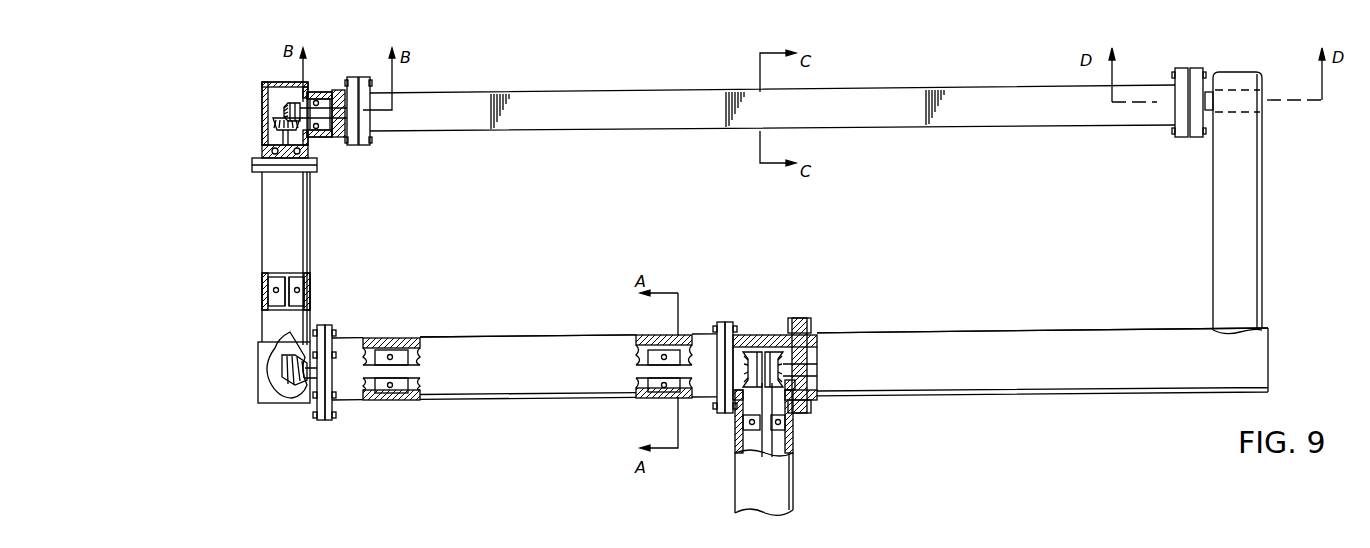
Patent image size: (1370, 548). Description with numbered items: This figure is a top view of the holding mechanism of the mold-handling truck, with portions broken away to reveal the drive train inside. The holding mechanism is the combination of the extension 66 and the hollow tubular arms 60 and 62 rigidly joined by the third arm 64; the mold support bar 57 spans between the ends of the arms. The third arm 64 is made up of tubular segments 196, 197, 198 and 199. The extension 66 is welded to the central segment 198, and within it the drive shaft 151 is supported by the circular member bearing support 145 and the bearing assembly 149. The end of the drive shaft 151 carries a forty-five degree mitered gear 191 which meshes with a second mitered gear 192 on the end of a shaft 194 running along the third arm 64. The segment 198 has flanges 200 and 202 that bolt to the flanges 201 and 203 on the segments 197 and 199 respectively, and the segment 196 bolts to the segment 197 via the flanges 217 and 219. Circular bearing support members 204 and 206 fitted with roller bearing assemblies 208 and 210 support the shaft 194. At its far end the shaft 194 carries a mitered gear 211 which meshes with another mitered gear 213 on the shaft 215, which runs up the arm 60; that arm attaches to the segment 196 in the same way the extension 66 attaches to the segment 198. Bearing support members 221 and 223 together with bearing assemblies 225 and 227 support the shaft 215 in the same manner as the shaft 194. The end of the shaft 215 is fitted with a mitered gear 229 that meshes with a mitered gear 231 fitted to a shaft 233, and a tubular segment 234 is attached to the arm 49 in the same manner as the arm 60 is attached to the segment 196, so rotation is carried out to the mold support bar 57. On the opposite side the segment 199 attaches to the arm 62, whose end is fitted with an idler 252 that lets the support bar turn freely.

The arm 49 is at (262, 100).
The mold support bar 57 is at (593, 124).
The hollow tubular arm 60 is at (262, 238).
The hollow tubular arm 62 is at (1258, 261).
The third arm 64 is at (523, 402).
The extension 66 is at (797, 490).
The circular member bearing support 145 is at (737, 423).
The bearing assembly 149 is at (788, 432).
The drive shaft 151 is at (773, 447).
The 45° mitered gear 191 is at (795, 384).
The 45° mitered gear 192 is at (750, 350).
The shaft 194 is at (413, 370).
The tubular segment 196 is at (260, 393).
The tubular segment 197 is at (518, 342).
The tubular segment 198 is at (778, 334).
The tubular segment 199 is at (950, 318).
The flange 200 is at (729, 333).
The flange 201 is at (720, 325).
The flange 202 is at (799, 320).
The flange 203 is at (810, 338).
The circular bearing support member 204 is at (395, 340).
The circular bearing support member 206 is at (668, 398).
The roller bearing assembly 208 is at (408, 381).
The roller bearing assembly 210 is at (646, 380).
The 45° mitered gear 211 is at (297, 382).
The 45° mitered gear 213 is at (280, 367).
The shaft 215 is at (287, 282).
The flange 217 is at (327, 418).
The flange 219 is at (318, 328).
The bearing support member 221 is at (263, 290).
The bearing support member 223 is at (262, 146).
The bearing assembly 225 is at (280, 297).
The bearing assembly 227 is at (300, 170).
The 45° mitered gear 229 is at (278, 119).
The 45° mitered gear 231 is at (297, 103).
The shaft 233 is at (332, 138).
The tubular segment 234 is at (337, 87).
The idler 252 is at (1238, 90).